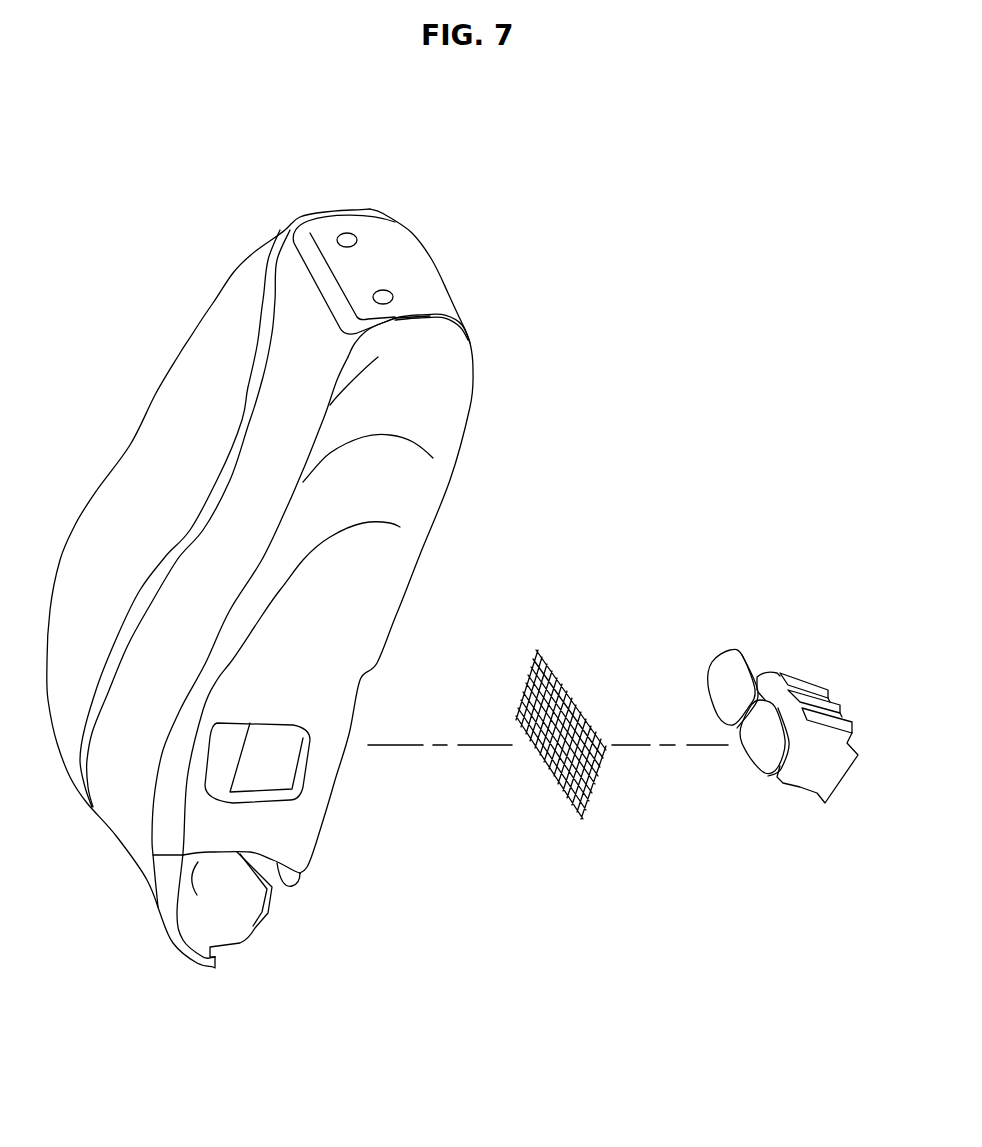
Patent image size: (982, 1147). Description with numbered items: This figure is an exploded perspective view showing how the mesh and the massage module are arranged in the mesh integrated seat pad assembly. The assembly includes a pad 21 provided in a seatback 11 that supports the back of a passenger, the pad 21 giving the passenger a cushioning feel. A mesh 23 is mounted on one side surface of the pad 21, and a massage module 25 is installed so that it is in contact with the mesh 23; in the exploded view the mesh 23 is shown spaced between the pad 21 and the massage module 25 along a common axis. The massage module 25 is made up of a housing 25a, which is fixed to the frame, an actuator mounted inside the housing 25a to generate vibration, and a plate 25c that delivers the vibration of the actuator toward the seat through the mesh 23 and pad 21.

The seatback 11 is at (558, 220).
The pad 21 is at (415, 287).
The mesh 23 is at (552, 772).
The massage module 25 is at (784, 722).
The housing 25a is at (807, 783).
The plate 25c is at (755, 757).